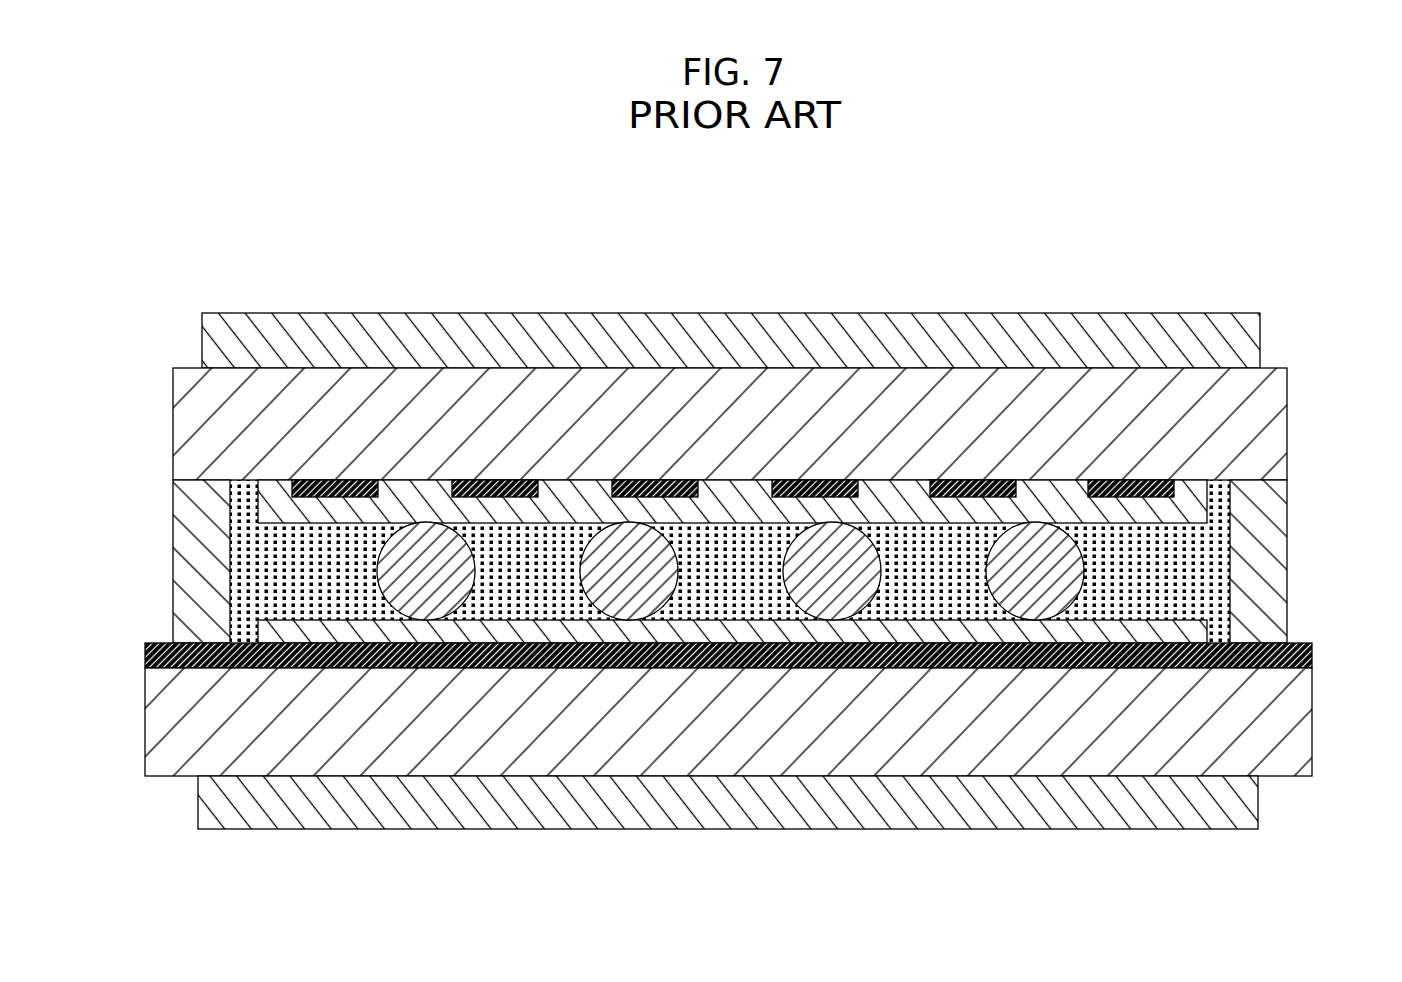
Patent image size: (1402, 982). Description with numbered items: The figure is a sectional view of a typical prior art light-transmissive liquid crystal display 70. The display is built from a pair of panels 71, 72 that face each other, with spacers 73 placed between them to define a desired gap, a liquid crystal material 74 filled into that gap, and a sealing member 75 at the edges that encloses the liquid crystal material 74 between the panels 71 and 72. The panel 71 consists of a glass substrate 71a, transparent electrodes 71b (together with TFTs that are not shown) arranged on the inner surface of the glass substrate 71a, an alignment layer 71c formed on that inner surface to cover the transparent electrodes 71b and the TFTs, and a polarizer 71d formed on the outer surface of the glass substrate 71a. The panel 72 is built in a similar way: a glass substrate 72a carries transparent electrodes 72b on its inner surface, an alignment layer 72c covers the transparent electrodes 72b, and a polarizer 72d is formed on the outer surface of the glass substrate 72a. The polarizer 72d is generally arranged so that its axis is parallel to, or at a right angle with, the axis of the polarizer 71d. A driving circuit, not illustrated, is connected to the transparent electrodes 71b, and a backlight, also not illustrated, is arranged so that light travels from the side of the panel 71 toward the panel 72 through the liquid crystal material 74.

The liquid crystal display 70 is at (530, 290).
The panel 71 is at (160, 368).
The glass substrate 71a is at (1266, 418).
The transparent electrodes 71b is at (973, 479).
The alignment layer 71c is at (1200, 507).
The polarizer 71d is at (1174, 322).
The panel 72 is at (135, 777).
The glass substrate 72a is at (1299, 742).
The transparent electrodes 72b is at (1312, 652).
The alignment layer 72c is at (1200, 618).
The polarizer 72d is at (1195, 822).
The spacers 73 is at (823, 608).
The liquid crystal material 74 is at (545, 596).
The sealing member 75 is at (175, 538).